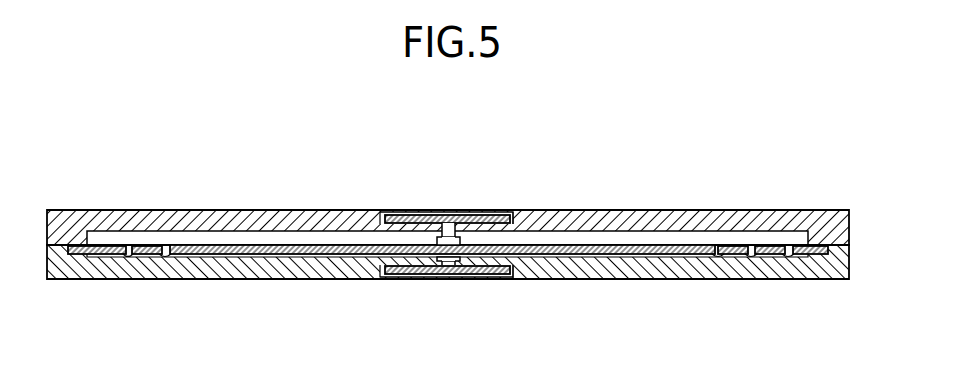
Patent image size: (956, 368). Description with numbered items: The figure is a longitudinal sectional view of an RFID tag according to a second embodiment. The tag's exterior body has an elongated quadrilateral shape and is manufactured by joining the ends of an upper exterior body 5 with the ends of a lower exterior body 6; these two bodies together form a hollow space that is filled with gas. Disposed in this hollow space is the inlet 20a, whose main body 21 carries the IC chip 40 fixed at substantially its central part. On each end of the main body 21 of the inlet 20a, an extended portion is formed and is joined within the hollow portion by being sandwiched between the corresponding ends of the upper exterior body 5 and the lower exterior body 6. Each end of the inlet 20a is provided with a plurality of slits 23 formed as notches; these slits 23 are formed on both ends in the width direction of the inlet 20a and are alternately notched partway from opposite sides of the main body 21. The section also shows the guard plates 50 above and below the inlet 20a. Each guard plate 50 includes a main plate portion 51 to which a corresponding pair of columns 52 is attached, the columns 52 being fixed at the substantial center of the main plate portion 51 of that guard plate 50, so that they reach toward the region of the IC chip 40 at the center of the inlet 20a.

The upper exterior body 5 is at (70, 210).
The lower exterior body 6 is at (70, 280).
The inlet 20a is at (207, 236).
The main body 21 is at (625, 250).
The slits 23 is at (172, 256).
The IC chip 40 is at (460, 237).
The guard plate 50 is at (395, 201).
The main plate portion 51 is at (418, 213).
The columns 52 is at (453, 233).